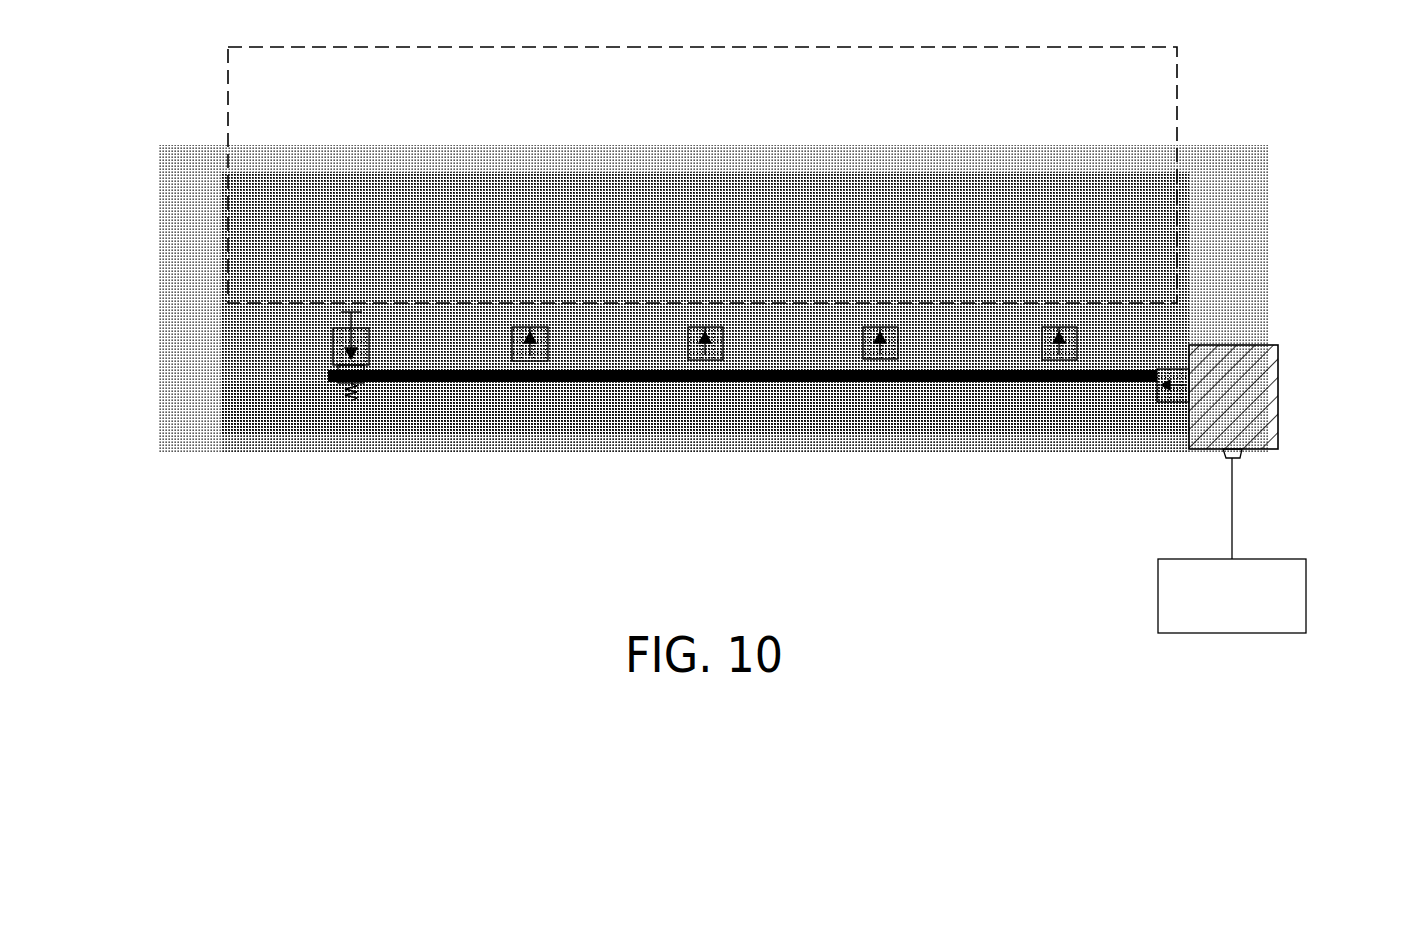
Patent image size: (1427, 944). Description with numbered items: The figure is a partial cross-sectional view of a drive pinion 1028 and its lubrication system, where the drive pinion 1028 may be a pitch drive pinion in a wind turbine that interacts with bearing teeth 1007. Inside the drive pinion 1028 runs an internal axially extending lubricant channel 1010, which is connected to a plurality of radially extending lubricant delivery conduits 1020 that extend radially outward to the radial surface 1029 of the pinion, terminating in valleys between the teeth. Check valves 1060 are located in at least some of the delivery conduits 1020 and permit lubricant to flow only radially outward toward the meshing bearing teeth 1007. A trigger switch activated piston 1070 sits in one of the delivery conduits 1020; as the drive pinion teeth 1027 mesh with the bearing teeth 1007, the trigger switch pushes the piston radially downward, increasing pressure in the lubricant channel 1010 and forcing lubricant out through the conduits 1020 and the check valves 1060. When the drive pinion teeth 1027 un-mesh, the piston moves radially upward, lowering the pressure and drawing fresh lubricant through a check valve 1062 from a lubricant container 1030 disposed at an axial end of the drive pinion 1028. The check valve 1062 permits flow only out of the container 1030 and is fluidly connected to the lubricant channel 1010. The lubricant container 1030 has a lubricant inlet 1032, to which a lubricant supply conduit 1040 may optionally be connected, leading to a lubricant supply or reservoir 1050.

The bearing teeth 1007 is at (760, 86).
The internal axially extending lubricant channel 1010 is at (805, 385).
The radially extending lubricant delivery conduits 1020 is at (885, 358).
The drive pinion teeth 1027 is at (218, 248).
The drive pinion 1028 is at (275, 413).
The radial surface 1029 is at (1158, 326).
The lubricant container 1030 is at (1275, 345).
The lubricant inlet 1032 is at (1240, 462).
The lubricant supply conduit 1040 is at (1240, 512).
The lubricant supply or reservoir 1050 is at (1267, 608).
The check valves 1060 is at (690, 358).
The check valve 1062 is at (1157, 402).
The trigger switch activated piston 1070 is at (370, 367).